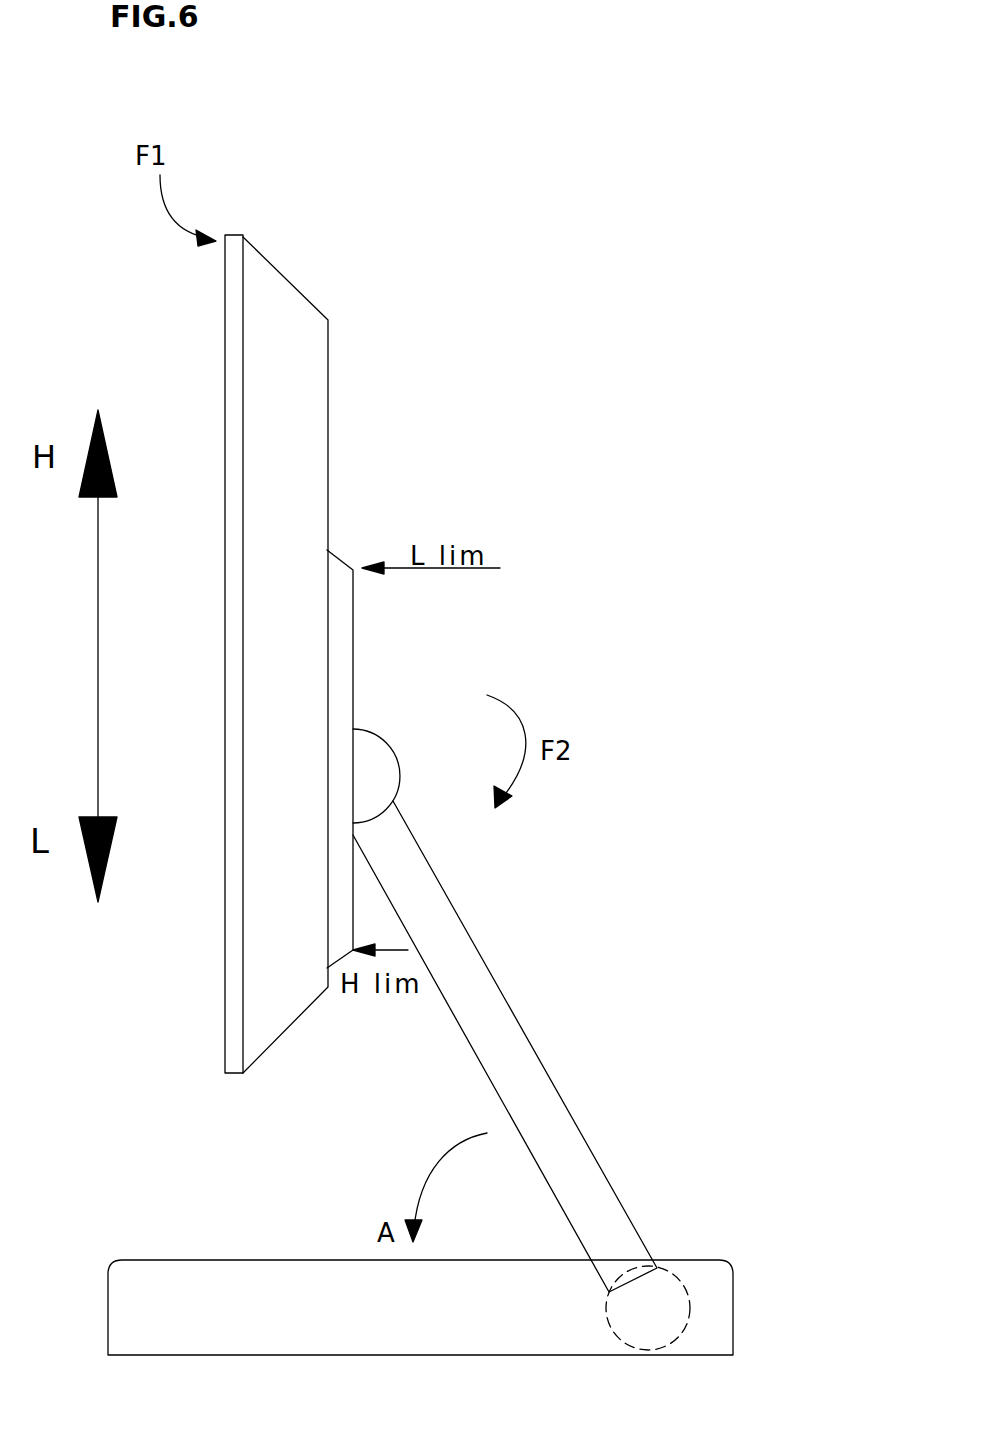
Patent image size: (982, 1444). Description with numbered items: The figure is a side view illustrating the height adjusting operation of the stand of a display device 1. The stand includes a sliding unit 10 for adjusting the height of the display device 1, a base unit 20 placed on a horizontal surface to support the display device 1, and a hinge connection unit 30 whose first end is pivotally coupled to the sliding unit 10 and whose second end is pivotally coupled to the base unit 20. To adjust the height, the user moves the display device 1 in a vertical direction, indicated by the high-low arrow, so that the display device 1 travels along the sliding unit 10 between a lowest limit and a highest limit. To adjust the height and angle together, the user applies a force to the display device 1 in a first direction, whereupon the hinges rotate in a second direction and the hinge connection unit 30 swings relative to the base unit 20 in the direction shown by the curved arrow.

The display device 1 is at (268, 440).
The sliding unit 10 is at (338, 640).
The base unit 20 is at (712, 1313).
The hinge connection unit 30 is at (522, 1053).